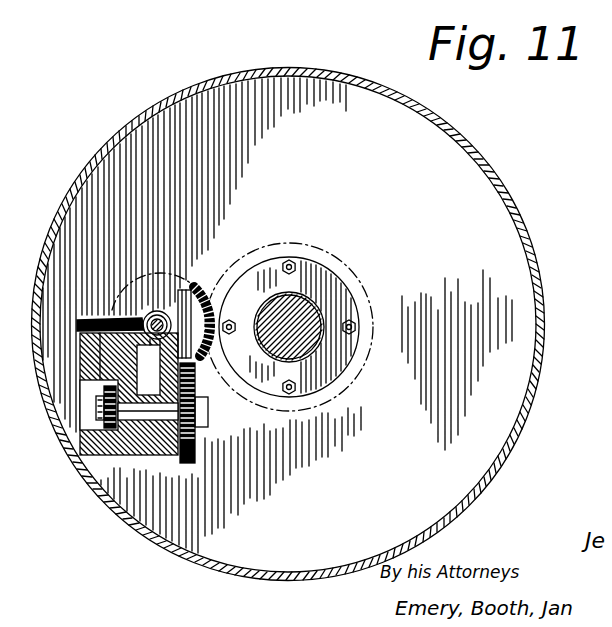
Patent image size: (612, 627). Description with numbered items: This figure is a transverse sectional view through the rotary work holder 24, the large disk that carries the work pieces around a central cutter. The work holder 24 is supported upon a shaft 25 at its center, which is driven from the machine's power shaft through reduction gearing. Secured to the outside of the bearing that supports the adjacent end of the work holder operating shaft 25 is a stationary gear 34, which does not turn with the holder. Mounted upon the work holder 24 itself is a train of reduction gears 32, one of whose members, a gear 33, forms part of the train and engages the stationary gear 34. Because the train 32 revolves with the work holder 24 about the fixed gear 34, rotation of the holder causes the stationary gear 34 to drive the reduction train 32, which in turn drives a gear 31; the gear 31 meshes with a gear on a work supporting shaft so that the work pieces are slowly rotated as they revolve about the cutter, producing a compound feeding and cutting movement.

The rotary work holder 24 is at (518, 298).
The shaft 25 is at (305, 347).
The gear 31 is at (183, 465).
The train of reduction gears 32 is at (100, 315).
The gear 33 is at (182, 290).
The stationary gear 34 is at (332, 262).